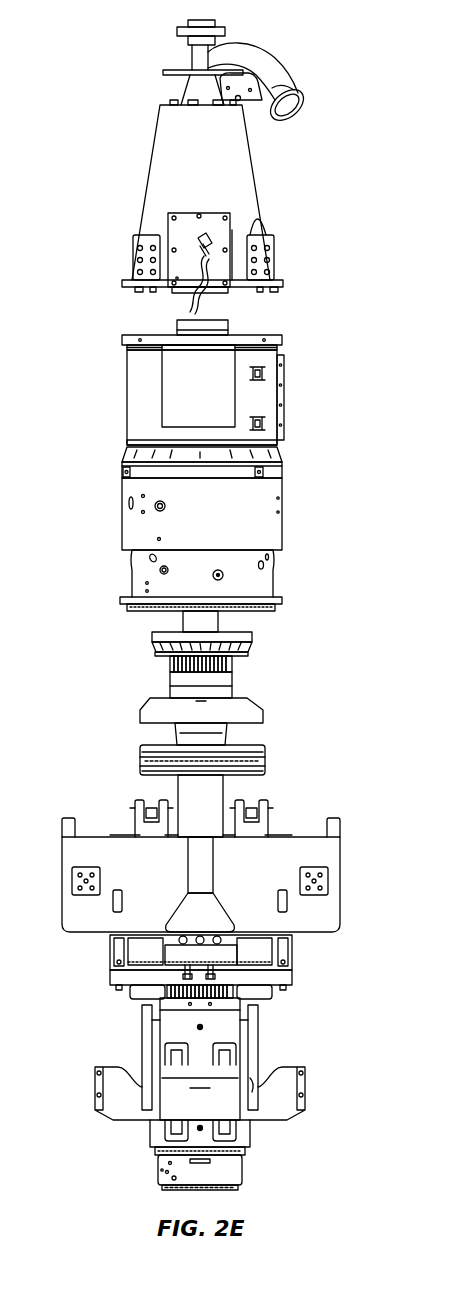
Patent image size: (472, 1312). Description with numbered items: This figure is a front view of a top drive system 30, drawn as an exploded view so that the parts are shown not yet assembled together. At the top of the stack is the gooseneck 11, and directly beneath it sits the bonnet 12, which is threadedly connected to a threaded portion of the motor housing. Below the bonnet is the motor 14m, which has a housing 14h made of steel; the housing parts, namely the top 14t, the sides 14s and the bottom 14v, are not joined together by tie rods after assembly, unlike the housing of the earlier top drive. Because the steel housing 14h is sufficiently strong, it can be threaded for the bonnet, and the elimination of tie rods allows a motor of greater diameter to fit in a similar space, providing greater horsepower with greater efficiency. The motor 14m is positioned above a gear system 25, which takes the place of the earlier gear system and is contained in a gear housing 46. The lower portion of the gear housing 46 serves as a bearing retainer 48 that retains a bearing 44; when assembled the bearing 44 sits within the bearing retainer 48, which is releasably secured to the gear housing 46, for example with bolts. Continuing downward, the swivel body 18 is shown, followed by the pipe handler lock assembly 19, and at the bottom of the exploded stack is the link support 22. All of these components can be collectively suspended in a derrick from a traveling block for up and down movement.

The top drive system 30 is at (122, 64).
The gooseneck 11 is at (268, 62).
The bonnet 12 is at (250, 170).
The top 14t is at (263, 333).
The motor 14m is at (126, 352).
The housing 14h is at (134, 432).
The sides 14s is at (271, 426).
The bottom 14v is at (245, 467).
The gear system 25 is at (127, 517).
The gear housing 46 is at (135, 580).
The bearing retainer 48 is at (120, 602).
The bearing 44 is at (153, 643).
The swivel body 18 is at (68, 912).
The pipe handler lock assembly 19 is at (290, 963).
The link support 22 is at (108, 1093).